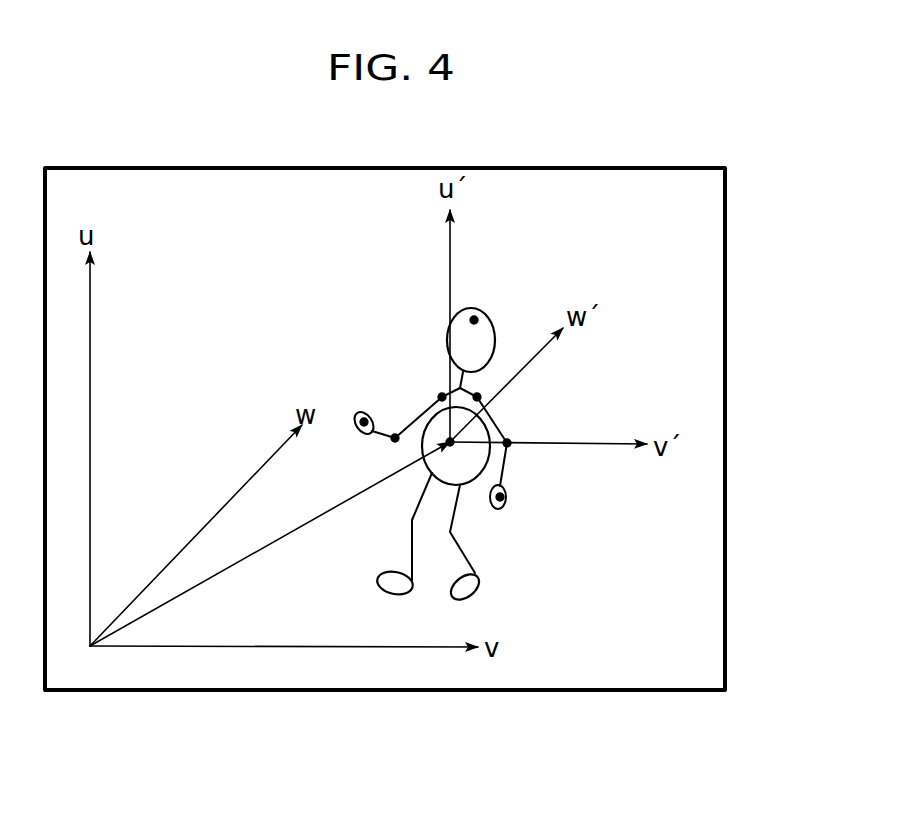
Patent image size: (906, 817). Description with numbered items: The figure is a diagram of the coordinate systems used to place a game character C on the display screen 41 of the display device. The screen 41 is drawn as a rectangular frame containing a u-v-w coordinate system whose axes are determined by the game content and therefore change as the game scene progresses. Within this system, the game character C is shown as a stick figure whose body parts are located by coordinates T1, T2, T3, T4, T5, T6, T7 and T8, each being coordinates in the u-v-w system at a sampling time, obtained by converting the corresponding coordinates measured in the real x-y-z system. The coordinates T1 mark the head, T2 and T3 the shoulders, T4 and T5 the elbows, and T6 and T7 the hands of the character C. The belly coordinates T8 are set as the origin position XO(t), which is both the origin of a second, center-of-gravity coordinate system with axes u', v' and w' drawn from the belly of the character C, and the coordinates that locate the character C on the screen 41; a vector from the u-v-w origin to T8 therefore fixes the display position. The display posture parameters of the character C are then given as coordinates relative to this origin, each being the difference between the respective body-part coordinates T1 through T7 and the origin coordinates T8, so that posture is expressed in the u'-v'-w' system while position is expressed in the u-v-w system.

The display screen 41 is at (726, 219).
The game character C is at (442, 420).
The coordinates T1 is at (471, 326).
The coordinates T2 is at (433, 385).
The coordinates T3 is at (496, 365).
The coordinates T4 is at (409, 419).
The coordinates T5 is at (506, 422).
The coordinates T6 is at (366, 410).
The coordinates T7 is at (515, 478).
The coordinates T8 is at (472, 458).